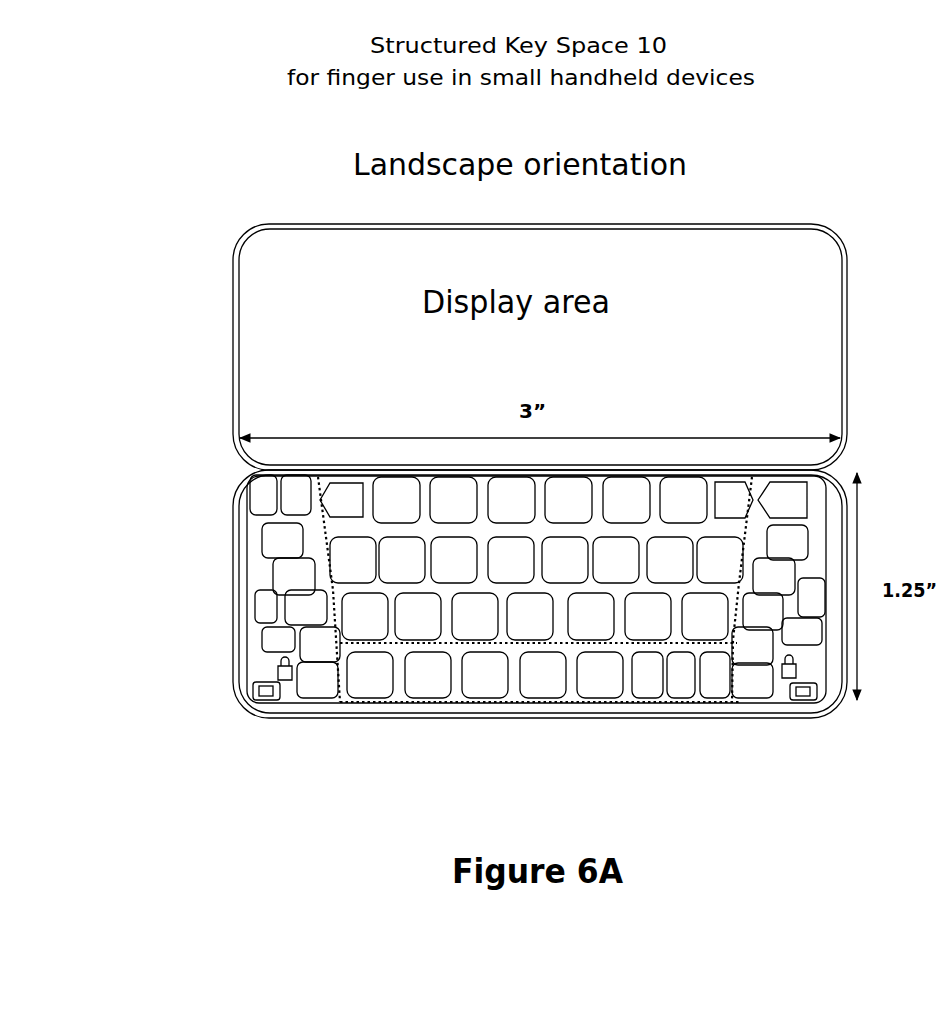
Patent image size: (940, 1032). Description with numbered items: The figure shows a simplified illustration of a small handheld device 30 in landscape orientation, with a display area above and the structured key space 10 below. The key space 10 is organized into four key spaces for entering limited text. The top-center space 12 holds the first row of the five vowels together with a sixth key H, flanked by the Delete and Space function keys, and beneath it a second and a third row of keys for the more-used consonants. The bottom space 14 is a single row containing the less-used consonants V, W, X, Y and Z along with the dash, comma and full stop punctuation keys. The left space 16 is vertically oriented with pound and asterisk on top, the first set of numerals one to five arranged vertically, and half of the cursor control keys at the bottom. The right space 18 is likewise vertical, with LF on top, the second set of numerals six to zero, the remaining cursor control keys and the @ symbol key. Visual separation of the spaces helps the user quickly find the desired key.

The key space 10 is at (248, 610).
The top-center space 12 is at (734, 470).
The bottom space 14 is at (689, 704).
The left space 16 is at (253, 585).
The right space 18 is at (808, 657).
The device 30 is at (235, 363).